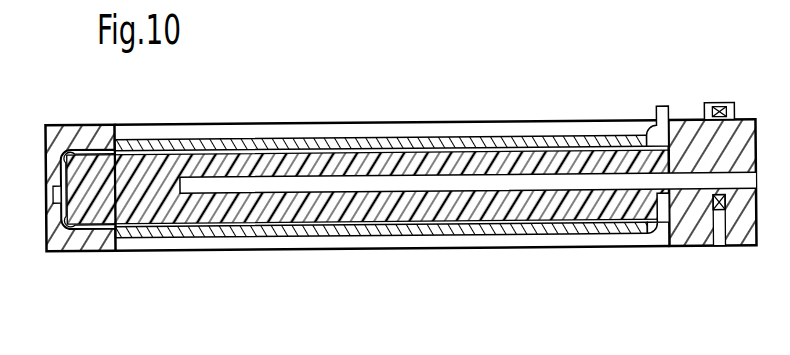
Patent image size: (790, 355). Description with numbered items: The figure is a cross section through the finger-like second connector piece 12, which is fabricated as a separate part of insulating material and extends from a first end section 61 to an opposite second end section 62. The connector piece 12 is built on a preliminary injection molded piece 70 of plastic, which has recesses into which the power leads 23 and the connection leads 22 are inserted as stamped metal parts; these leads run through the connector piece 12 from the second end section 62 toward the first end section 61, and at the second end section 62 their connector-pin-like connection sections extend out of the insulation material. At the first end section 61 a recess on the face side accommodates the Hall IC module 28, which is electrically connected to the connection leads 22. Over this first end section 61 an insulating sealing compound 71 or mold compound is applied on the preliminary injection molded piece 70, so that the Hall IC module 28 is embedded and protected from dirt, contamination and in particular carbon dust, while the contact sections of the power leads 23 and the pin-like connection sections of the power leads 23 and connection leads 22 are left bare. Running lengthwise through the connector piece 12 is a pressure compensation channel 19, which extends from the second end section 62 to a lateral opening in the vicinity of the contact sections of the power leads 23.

The second connector piece 12 is at (364, 123).
The pressure compensation channel 19 is at (532, 186).
The connection leads 22 is at (533, 142).
The power leads 23 is at (735, 105).
The Hall IC module 28 is at (45, 227).
The first end section 61 is at (80, 258).
The second end section 62 is at (687, 255).
The preliminary injection molded piece 70 is at (182, 150).
The sealing compound 71 is at (80, 126).